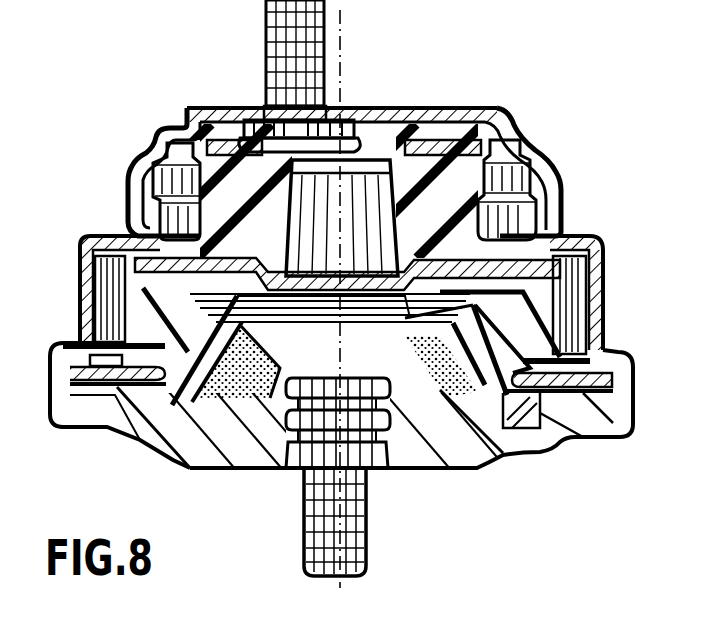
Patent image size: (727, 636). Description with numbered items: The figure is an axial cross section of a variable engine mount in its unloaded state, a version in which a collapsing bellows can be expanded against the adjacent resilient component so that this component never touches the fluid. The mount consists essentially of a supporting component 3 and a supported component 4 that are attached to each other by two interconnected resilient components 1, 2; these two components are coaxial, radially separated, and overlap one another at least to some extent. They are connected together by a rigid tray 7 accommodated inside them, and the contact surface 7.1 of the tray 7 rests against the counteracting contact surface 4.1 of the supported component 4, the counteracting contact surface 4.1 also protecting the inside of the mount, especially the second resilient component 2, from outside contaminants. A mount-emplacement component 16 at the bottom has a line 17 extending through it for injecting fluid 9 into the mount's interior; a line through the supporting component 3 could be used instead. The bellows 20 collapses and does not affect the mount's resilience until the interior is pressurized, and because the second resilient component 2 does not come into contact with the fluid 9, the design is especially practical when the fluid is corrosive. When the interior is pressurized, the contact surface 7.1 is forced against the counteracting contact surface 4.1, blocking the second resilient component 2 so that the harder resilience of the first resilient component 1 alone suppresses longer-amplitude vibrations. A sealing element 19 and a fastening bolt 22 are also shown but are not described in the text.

The resilient component 1 is at (441, 223).
The second resilient component 2 is at (347, 305).
The supporting component 3 is at (376, 108).
The supported component 4 is at (414, 460).
The counteracting contact surface 4.1 is at (96, 236).
The tray 7 is at (510, 292).
The contact surface 7.1 is at (600, 266).
The fluid 9 is at (420, 382).
The mount-emplacement component 16 is at (304, 500).
The line 17 is at (366, 548).
The sealing ring 19 is at (80, 300).
The bellows 20 is at (270, 400).
The fastening bolt 22 is at (348, 38).